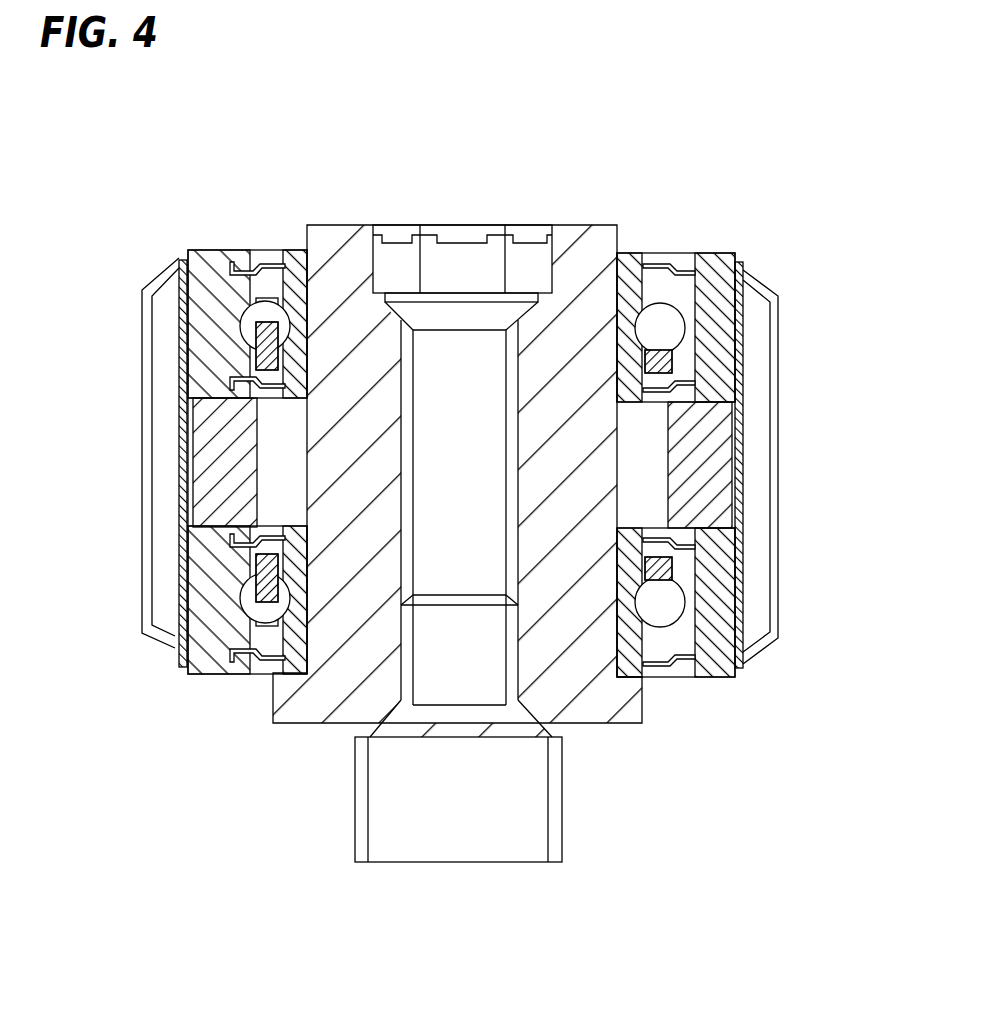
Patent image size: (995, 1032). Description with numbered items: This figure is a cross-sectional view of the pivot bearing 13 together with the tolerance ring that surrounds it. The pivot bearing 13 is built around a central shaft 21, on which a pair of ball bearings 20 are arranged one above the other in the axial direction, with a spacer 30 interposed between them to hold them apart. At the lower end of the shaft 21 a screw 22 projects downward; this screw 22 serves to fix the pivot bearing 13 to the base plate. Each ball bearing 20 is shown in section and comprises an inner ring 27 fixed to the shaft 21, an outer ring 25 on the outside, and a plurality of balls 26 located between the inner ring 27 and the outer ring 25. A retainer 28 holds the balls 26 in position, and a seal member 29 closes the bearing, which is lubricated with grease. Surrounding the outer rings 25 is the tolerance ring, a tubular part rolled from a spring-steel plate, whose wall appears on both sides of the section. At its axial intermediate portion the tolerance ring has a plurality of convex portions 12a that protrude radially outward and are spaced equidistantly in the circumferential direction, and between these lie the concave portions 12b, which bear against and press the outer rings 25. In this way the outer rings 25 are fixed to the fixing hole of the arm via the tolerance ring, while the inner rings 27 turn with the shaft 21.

The pivot bearing 13 is at (782, 232).
The ball bearing 20 is at (215, 455).
The shaft 21 is at (598, 472).
The screw 22 is at (360, 800).
The outer ring 25 is at (210, 357).
The ball 26 is at (240, 327).
The inner ring 27 is at (300, 262).
The retainer 28 is at (266, 340).
The seal member 29 is at (263, 296).
The spacer 30 is at (220, 463).
The convex portion 12a is at (777, 540).
The concave portion 12b is at (177, 558).